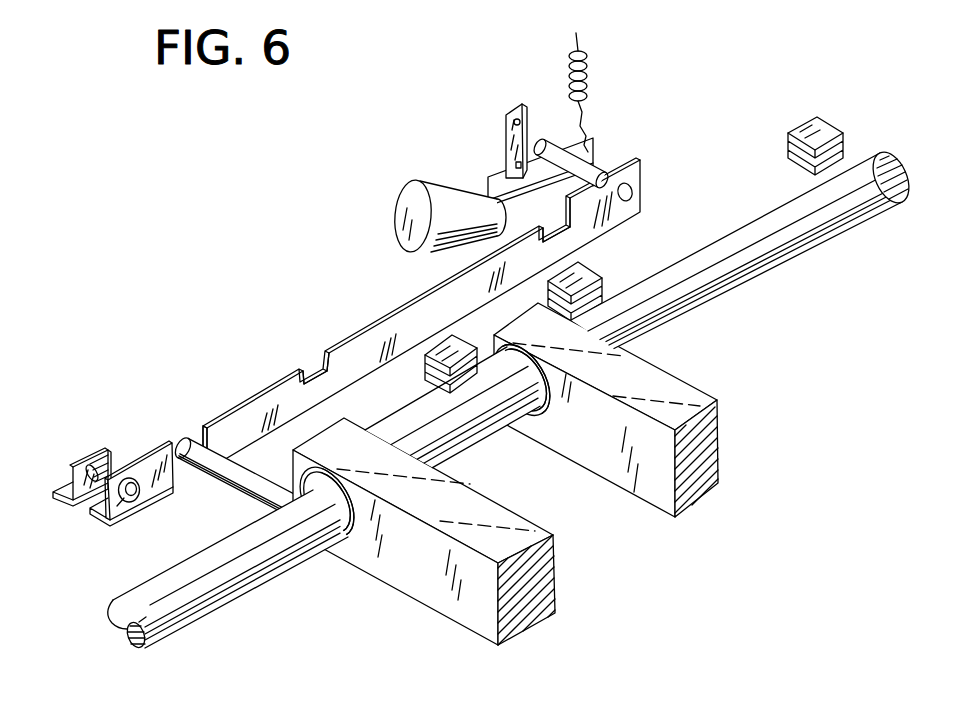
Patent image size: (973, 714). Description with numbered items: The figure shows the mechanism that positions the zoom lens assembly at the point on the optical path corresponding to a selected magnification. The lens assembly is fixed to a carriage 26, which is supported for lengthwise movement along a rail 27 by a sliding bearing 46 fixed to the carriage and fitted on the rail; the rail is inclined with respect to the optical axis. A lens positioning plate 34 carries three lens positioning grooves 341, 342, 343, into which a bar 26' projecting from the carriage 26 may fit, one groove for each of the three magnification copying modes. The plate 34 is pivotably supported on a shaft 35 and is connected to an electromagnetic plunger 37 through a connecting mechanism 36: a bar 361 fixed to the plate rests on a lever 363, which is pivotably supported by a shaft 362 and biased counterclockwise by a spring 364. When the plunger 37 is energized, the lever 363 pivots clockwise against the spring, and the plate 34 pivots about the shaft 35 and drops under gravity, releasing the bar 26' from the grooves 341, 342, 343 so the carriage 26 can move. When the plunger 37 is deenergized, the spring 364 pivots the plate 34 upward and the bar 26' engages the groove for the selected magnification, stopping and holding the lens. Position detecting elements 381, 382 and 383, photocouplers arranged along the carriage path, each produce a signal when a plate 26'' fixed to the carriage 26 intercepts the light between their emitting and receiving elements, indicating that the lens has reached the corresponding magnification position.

The carriage 26 is at (535, 474).
The bar 26' is at (240, 484).
The plate 26'' is at (463, 409).
The rail 27 is at (893, 171).
The lens positioning plate 34 is at (638, 183).
The shaft 35 is at (98, 467).
The connecting mechanism 36 is at (581, 119).
The electromagnetic plunger 37 is at (430, 207).
The sliding bearing 46 is at (552, 400).
The lens positioning groove 341 is at (315, 368).
The lens positioning groove 342 is at (550, 221).
The lens positioning groove 343 is at (200, 428).
The bar 361 is at (598, 168).
The shaft 362 is at (504, 118).
The lever 363 is at (588, 147).
The spring 364 is at (588, 80).
The position detecting element 381 is at (578, 265).
The position detecting element 382 is at (820, 124).
The position detecting element 383 is at (442, 352).